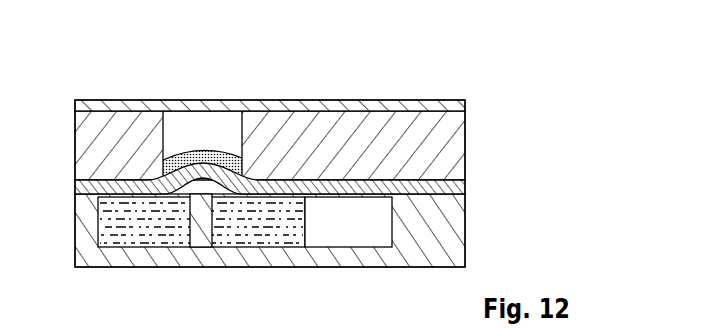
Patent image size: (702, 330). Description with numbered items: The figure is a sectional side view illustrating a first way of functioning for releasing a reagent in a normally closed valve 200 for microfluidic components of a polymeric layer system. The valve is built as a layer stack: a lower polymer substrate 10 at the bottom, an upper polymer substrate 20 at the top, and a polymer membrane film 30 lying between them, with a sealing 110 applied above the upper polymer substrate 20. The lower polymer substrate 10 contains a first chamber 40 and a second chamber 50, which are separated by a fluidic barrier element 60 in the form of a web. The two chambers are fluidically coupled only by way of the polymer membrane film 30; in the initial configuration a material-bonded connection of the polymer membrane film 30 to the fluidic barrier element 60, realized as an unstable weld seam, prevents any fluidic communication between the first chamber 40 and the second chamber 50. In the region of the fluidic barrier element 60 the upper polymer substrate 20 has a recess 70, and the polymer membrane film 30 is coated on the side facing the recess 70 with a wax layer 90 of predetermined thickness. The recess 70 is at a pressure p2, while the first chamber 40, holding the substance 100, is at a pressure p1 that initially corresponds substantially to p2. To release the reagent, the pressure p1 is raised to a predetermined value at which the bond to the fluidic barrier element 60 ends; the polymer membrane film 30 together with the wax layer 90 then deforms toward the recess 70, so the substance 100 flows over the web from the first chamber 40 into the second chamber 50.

The lower polymer substrate 10 is at (90, 218).
The upper polymer substrate 20 is at (83, 145).
The polymer membrane film 30 is at (87, 190).
The first chamber 40 is at (146, 228).
The second chamber 50 is at (298, 230).
The fluidic barrier element 60 is at (203, 228).
The recess 70 is at (203, 137).
The wax layer 90 is at (181, 152).
The substance 100 is at (110, 228).
The sealing 110 is at (328, 111).
The normally closed valve 200 is at (488, 120).
The pressure p1 is at (132, 213).
The pressure p2 is at (222, 130).